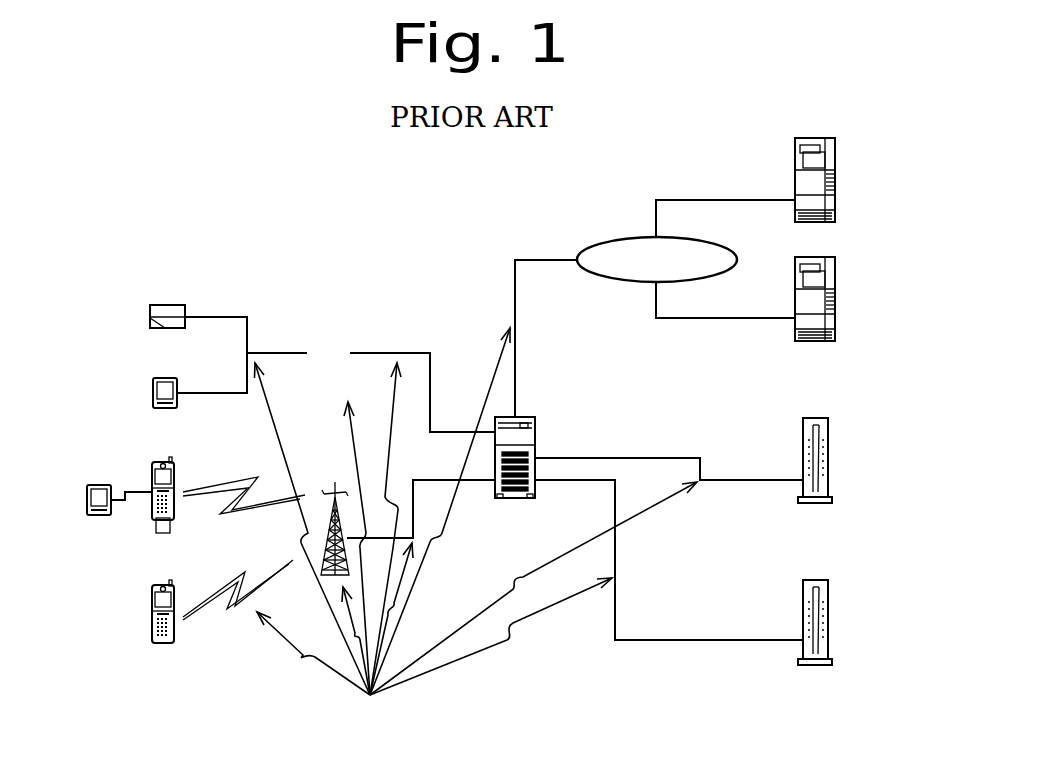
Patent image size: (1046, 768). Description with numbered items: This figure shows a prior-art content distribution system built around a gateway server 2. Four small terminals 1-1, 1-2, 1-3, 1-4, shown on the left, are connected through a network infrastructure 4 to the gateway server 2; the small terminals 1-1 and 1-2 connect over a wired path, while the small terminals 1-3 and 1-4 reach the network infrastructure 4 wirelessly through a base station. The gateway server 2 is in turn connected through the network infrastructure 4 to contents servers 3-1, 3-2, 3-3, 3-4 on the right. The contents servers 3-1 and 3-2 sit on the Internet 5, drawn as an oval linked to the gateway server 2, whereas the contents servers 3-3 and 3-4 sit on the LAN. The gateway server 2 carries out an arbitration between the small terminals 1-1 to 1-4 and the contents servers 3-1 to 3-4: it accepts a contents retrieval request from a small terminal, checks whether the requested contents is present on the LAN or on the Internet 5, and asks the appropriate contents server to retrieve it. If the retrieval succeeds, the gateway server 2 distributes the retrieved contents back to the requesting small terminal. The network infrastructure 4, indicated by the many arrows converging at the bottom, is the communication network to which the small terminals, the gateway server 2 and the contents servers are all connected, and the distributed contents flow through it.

The small terminal 1-1 is at (170, 305).
The small terminal 1-2 is at (162, 378).
The small terminal 1-3 is at (97, 485).
The small terminal 1-4 is at (152, 600).
The gateway server 2 is at (552, 427).
The contents server 3-1 is at (835, 158).
The contents server 3-2 is at (835, 276).
The contents server 3-3 is at (831, 438).
The contents server 3-4 is at (831, 598).
The network infrastructure 4 is at (476, 526).
The Internet 5 is at (610, 237).